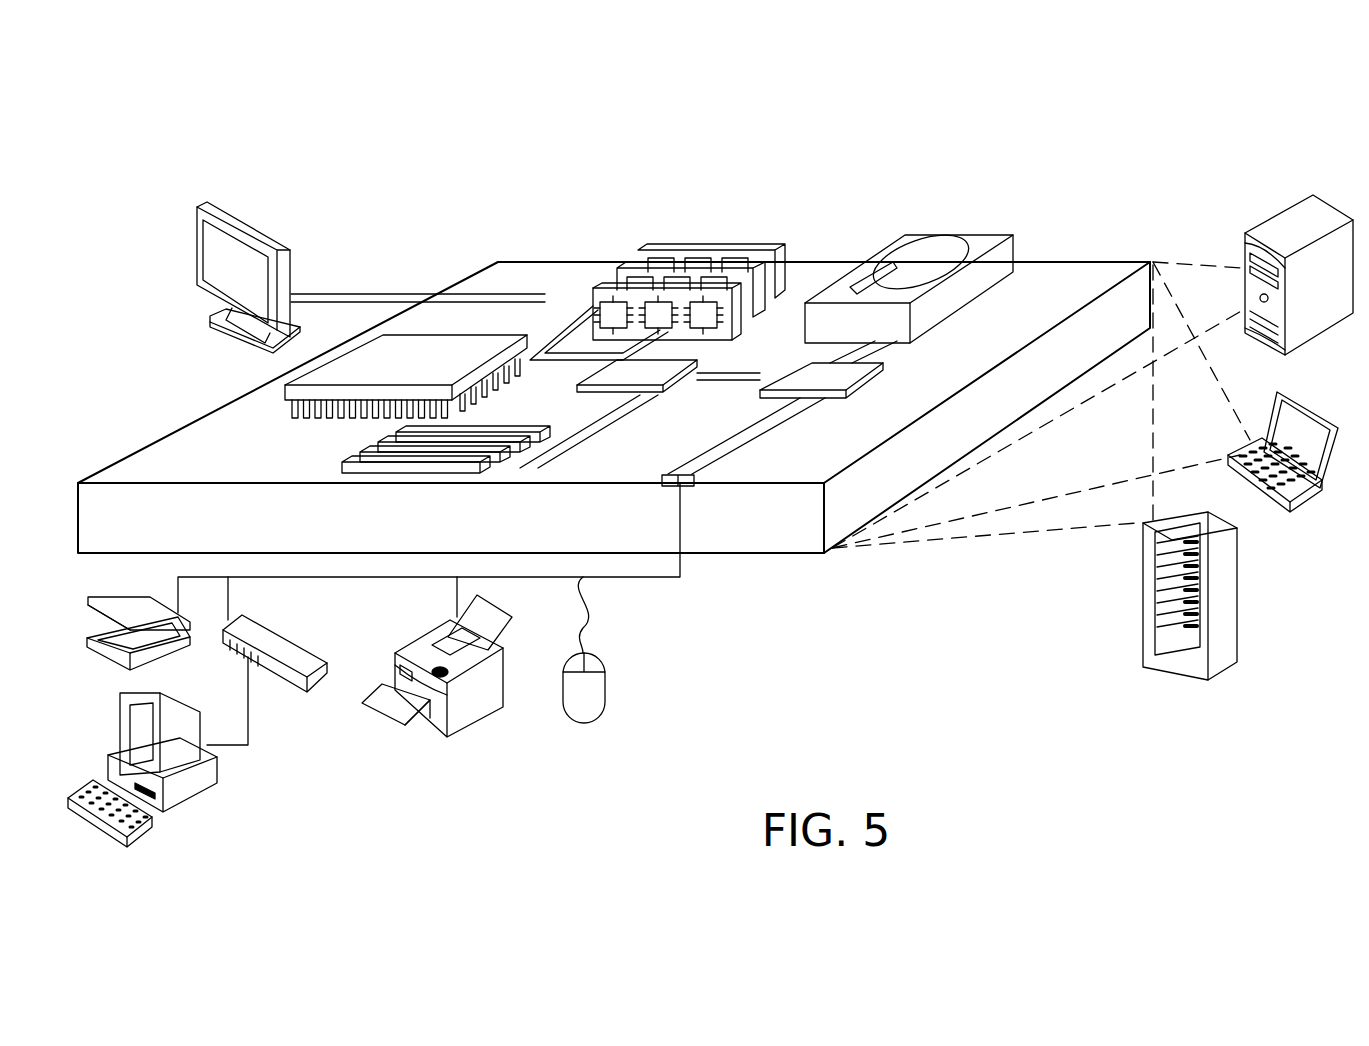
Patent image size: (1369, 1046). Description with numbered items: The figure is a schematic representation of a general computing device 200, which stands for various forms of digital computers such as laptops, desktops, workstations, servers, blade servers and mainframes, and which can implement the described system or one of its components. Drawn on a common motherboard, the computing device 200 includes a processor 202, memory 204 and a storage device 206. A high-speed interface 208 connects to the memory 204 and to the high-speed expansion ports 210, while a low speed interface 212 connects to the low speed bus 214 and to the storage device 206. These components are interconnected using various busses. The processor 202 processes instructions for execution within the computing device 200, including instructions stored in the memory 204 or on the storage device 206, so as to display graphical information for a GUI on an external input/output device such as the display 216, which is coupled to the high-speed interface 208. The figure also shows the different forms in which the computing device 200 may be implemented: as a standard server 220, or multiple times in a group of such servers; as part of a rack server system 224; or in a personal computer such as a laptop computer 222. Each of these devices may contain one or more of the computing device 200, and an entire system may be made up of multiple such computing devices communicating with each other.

The computing device 200 is at (368, 238).
The processor 202 is at (282, 397).
The memory 204 is at (666, 250).
The storage device 206 is at (908, 236).
The high-speed interface 208 is at (617, 372).
The high-speed expansion ports 210 is at (340, 466).
The low speed interface 212 is at (800, 372).
The low speed bus 214 is at (695, 486).
The display 216 is at (197, 225).
The standard server 220 is at (1262, 228).
The laptop computer 222 is at (1297, 493).
The rack server system 224 is at (1143, 583).